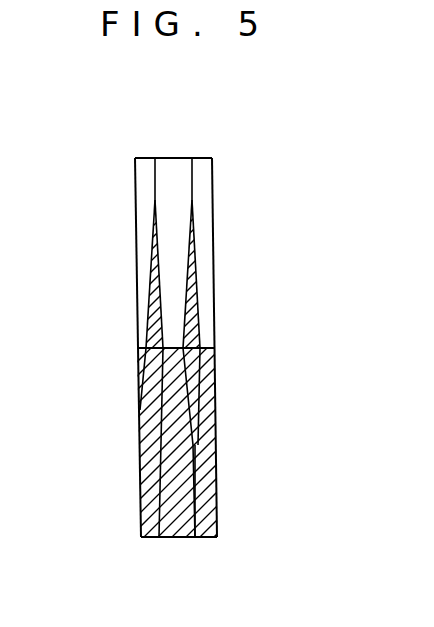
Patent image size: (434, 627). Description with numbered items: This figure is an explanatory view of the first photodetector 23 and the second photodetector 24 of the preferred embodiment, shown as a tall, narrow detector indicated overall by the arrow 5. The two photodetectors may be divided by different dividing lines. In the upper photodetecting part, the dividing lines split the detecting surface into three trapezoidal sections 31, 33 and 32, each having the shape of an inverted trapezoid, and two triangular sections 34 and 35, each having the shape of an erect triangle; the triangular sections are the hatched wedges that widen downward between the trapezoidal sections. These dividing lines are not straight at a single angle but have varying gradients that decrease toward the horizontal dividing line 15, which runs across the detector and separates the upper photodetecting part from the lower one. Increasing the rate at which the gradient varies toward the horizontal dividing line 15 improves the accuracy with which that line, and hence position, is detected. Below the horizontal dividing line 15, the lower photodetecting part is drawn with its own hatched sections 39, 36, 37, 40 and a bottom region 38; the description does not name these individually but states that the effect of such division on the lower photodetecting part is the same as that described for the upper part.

The electrode assembly 5 is at (240, 262).
The horizontal dividing line 15 is at (213, 337).
The first photodetector 23 is at (203, 280).
The second photodetector 24 is at (213, 408).
The trapezoidal section 31 is at (146, 203).
The trapezoidal section 32 is at (203, 232).
The trapezoidal section 33 is at (197, 200).
The triangular section 34 is at (155, 330).
The triangular section 35 is at (190, 333).
The central filler 36 is at (150, 459).
The right wall filler 37 is at (207, 458).
The bottom end face 38 is at (178, 538).
The left wall filler 39 is at (152, 373).
The right upper filler 40 is at (200, 367).